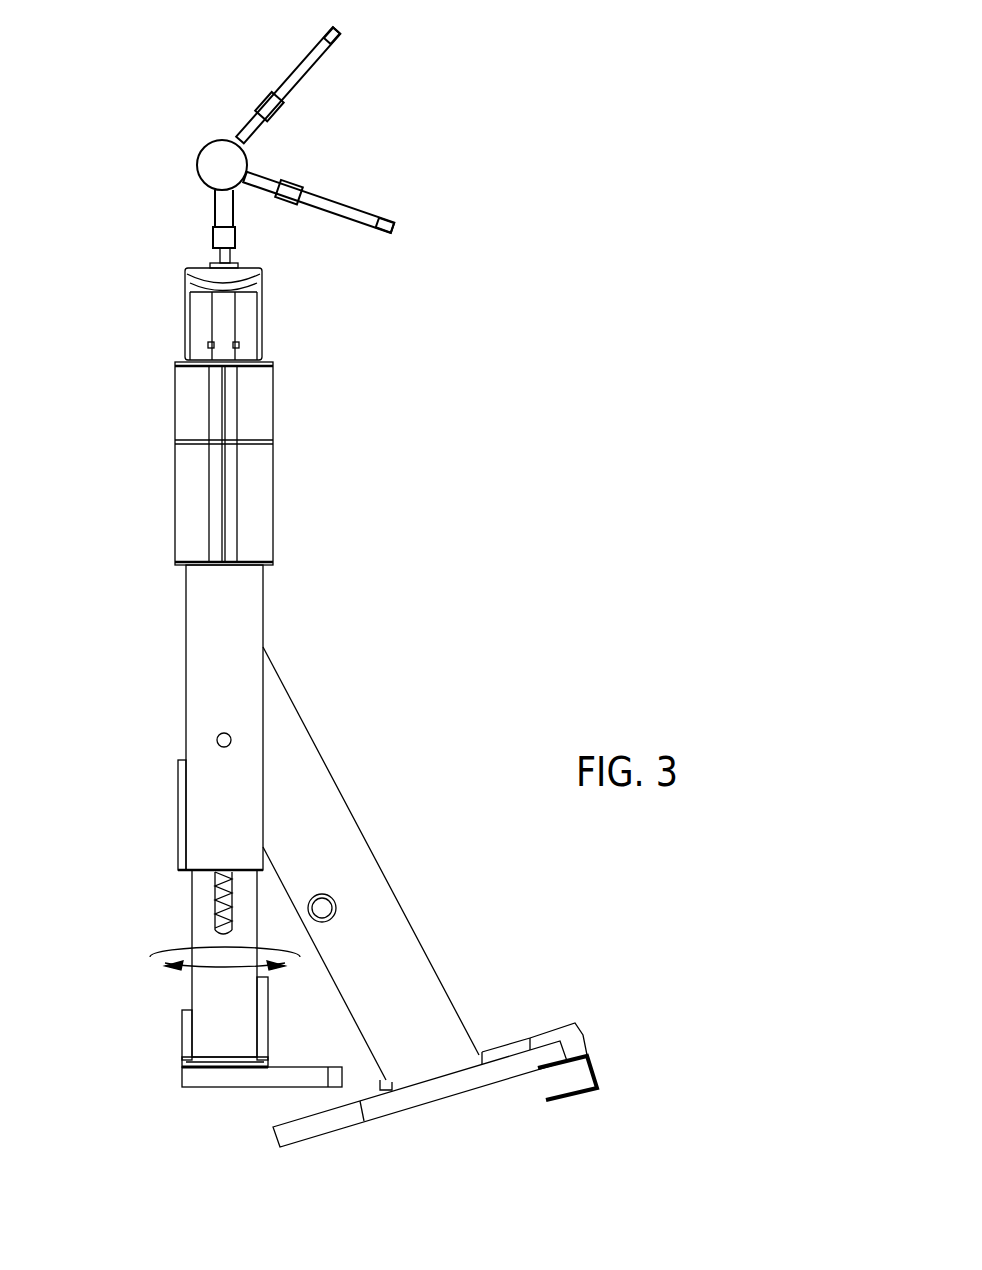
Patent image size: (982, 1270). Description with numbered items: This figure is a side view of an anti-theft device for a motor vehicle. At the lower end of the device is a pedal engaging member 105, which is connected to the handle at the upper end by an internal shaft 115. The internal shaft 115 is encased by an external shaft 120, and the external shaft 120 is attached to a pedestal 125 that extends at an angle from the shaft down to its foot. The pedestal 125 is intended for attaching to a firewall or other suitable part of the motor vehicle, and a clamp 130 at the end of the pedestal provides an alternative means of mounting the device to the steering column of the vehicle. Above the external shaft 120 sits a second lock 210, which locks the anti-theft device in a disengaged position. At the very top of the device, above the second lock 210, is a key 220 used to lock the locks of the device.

The pedal engaging member 105 is at (220, 1087).
The internal shaft 115 is at (190, 932).
The external shaft 120 is at (183, 672).
The pedestal 125 is at (495, 1077).
The clamp 130 is at (590, 1070).
The second lock 210 is at (268, 402).
The key 220 is at (347, 210).